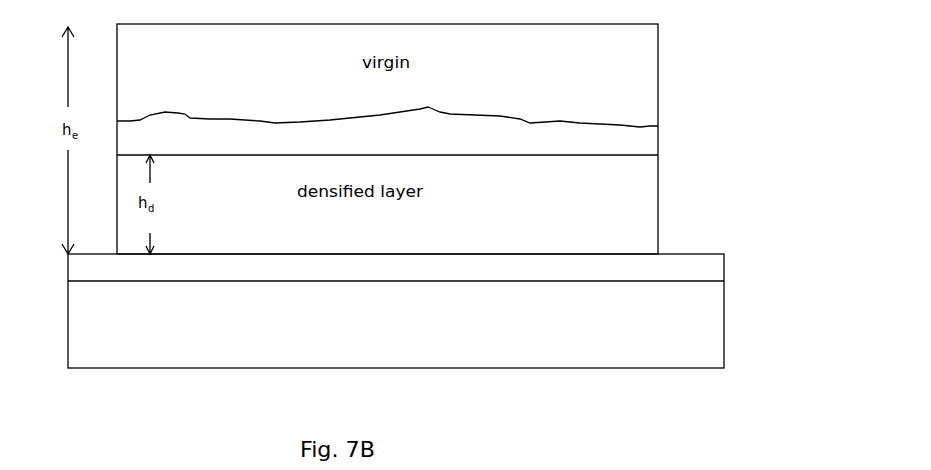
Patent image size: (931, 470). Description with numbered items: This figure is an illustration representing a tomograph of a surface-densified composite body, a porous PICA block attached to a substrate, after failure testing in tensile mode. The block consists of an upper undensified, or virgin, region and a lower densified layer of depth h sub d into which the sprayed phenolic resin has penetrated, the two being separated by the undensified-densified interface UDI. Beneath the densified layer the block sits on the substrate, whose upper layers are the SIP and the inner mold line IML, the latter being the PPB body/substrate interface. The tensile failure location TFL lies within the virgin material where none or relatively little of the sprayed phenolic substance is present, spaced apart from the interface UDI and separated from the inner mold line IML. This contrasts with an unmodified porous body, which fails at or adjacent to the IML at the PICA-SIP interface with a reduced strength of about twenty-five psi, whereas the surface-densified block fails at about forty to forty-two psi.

The undensified-densified interface UDI is at (678, 160).
The tensile failure location TFL is at (672, 120).
The SIP layer SIP is at (745, 276).
The inner mold line IML is at (745, 293).